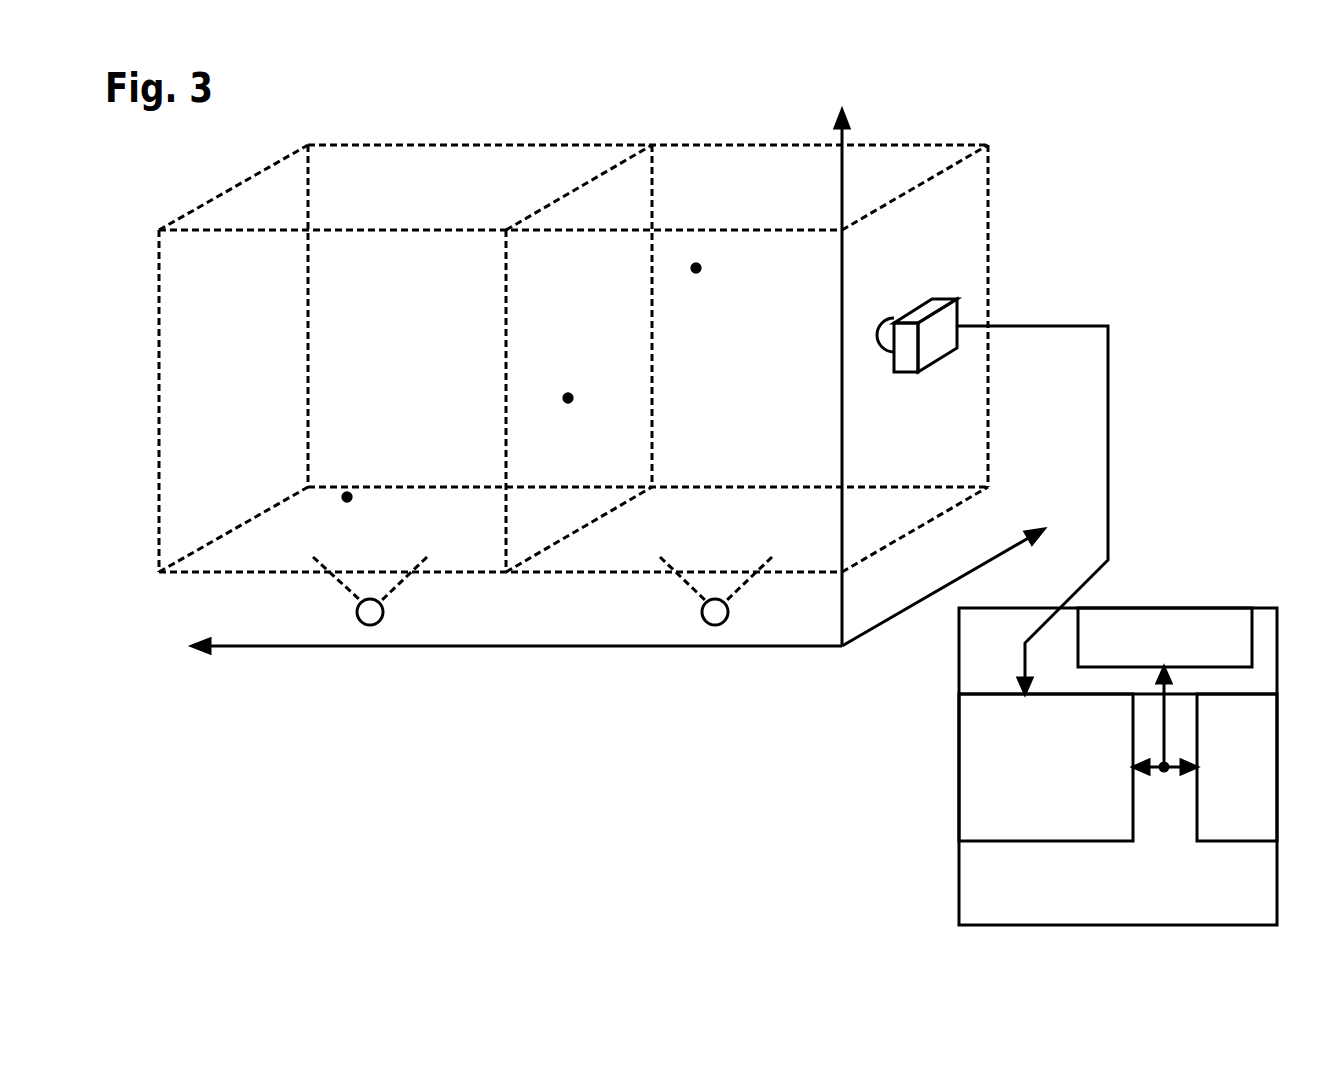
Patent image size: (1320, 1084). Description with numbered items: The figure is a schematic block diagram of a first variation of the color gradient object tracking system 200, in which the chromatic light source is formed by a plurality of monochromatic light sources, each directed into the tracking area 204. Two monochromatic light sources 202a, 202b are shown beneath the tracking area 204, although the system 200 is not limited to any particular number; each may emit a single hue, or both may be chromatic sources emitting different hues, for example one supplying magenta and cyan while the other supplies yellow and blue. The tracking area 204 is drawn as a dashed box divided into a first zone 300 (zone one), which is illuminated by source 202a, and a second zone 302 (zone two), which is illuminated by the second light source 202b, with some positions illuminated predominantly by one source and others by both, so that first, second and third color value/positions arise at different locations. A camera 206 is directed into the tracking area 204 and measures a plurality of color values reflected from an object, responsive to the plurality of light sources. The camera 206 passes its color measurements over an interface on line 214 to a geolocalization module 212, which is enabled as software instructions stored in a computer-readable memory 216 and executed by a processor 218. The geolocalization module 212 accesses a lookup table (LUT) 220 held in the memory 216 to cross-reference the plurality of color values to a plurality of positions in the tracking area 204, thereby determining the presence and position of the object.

The system 200 is at (222, 153).
The tracking area 204 is at (683, 145).
The first zone 300 is at (503, 360).
The second zone 302 is at (732, 244).
The monochromatic light source 202a is at (376, 612).
The monochromatic light source 202b is at (721, 612).
The camera 206 is at (928, 308).
The line 214 is at (1045, 323).
The memory 216 is at (1118, 766).
The processor 218 is at (1165, 691).
The geolocalization module 212 is at (1046, 767).
The lookup table (LUT) 220 is at (1237, 767).